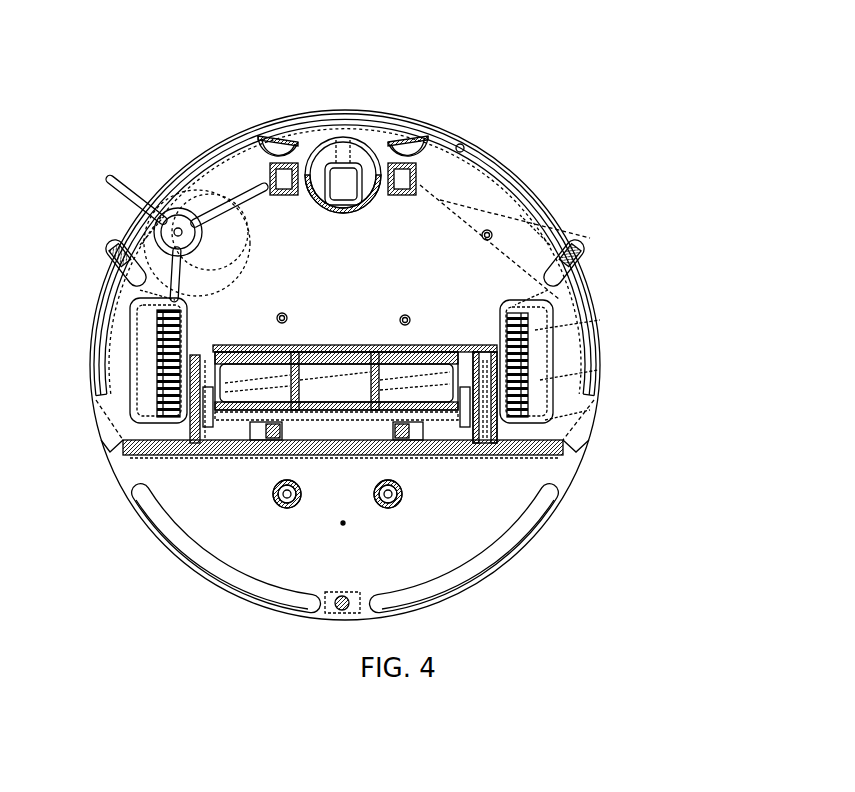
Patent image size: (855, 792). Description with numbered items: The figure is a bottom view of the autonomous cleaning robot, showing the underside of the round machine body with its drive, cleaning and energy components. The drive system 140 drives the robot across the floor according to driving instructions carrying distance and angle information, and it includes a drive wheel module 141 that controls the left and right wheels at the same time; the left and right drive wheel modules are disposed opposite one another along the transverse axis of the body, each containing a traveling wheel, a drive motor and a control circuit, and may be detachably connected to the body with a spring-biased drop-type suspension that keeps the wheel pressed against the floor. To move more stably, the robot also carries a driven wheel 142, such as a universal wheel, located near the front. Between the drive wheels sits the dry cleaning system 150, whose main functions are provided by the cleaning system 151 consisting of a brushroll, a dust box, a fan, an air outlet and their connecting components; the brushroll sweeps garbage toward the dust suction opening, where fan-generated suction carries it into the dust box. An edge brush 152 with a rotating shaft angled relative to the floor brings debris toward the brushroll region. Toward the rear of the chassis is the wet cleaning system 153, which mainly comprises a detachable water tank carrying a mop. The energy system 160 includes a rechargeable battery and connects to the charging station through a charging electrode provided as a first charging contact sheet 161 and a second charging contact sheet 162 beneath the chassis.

The drive system 140 is at (666, 178).
The drive wheel module 141 is at (545, 325).
The driven wheel 142 is at (423, 187).
The dry cleaning system 150 is at (207, 63).
The cleaning system 151 is at (268, 345).
The edge brush 152 is at (170, 213).
The wet cleaning system 153 is at (490, 537).
The energy system 160 is at (373, 63).
The first charging contact sheet 161 is at (285, 140).
The second charging contact sheet 162 is at (372, 140).